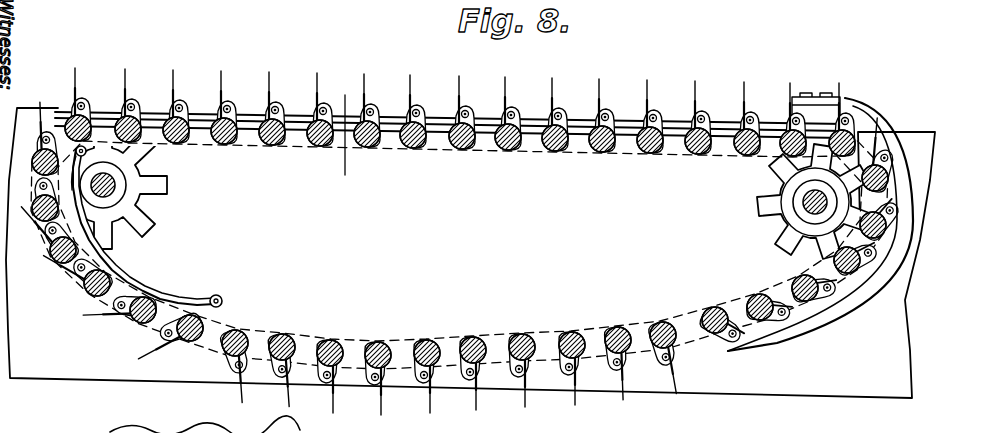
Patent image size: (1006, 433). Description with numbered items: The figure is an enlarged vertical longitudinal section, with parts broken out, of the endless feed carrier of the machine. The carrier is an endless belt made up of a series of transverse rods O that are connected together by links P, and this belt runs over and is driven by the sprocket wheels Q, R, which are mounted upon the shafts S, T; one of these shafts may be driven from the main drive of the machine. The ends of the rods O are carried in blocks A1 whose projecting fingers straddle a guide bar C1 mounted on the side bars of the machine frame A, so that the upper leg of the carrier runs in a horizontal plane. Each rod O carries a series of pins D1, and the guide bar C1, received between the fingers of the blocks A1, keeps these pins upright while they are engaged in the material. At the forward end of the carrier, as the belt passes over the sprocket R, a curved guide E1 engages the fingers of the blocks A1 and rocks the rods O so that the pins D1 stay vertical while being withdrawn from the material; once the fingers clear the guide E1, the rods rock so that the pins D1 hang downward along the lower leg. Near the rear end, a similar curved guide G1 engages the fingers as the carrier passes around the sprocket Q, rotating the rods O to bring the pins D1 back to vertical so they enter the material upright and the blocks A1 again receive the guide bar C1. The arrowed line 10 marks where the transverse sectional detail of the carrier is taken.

The machine frame A is at (827, 378).
The blocks A1 is at (268, 117).
The sprocket wheel Q is at (138, 198).
The shaft S is at (112, 190).
The sprocket wheel R is at (763, 202).
The shaft T is at (815, 202).
The guide bar C1 is at (298, 128).
The links P is at (397, 133).
The pins D1 is at (342, 412).
The transverse rods O is at (502, 148).
The curved guide G1 is at (148, 285).
The curved guide E1 is at (908, 210).
The section line 10 is at (340, 174).